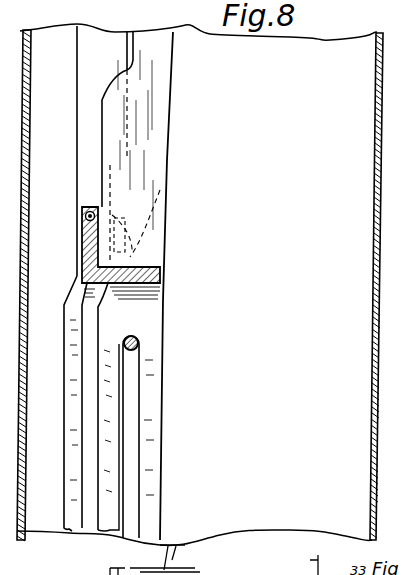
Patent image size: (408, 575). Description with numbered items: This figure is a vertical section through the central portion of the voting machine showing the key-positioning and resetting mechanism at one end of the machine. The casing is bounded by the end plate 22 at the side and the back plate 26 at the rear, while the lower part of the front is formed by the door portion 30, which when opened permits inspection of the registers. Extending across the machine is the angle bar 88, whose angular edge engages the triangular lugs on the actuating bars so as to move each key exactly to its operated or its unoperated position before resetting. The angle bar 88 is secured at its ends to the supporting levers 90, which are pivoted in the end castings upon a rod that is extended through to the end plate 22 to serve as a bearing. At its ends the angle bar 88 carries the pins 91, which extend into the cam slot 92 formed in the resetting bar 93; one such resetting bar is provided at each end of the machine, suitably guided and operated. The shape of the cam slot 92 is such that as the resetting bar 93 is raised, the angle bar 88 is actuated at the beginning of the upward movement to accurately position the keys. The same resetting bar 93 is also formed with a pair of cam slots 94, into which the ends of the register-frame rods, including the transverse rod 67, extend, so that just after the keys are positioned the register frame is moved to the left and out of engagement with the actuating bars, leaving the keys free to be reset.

The end plate 22 is at (171, 221).
The back plate 26 is at (372, 329).
The door portion 30 is at (399, 381).
The angle bar 88 is at (212, 285).
The supporting lever 90 is at (161, 228).
The pin 91 is at (83, 220).
The cam slot 92 is at (88, 327).
The resetting bar 93 is at (121, 265).
The cam slot 94 is at (137, 390).
The transverse rod 67 is at (139, 341).